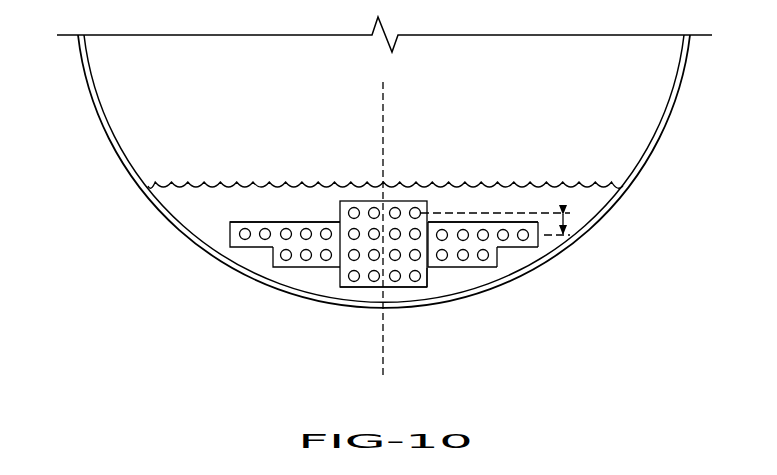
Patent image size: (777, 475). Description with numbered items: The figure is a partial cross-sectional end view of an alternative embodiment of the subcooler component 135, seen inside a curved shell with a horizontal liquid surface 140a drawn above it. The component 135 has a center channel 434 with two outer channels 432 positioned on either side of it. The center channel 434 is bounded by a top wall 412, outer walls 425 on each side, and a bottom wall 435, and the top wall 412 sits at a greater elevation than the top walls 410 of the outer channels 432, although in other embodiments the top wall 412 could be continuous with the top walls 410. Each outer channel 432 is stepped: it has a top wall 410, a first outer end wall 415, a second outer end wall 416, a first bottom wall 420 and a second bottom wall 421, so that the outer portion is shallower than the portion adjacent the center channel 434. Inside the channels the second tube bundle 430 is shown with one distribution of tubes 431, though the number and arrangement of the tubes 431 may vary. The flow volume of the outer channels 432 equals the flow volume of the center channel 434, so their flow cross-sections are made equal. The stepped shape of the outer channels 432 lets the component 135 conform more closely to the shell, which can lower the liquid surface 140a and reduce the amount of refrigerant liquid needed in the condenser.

The component 135 is at (285, 220).
The liquid surface 140a is at (567, 185).
The top walls 410 is at (473, 222).
The top wall 412 is at (405, 200).
The first outer end walls 415 is at (540, 240).
The second outer end walls 416 is at (498, 257).
The first bottom walls 420 is at (522, 247).
The second bottom walls 421 is at (476, 267).
The outer walls 425 is at (428, 282).
The second tube bundle 430 is at (277, 248).
The tubes 431 is at (238, 236).
The outer channels 432 is at (303, 273).
The center channel 434 is at (368, 200).
The bottom wall 435 is at (353, 287).